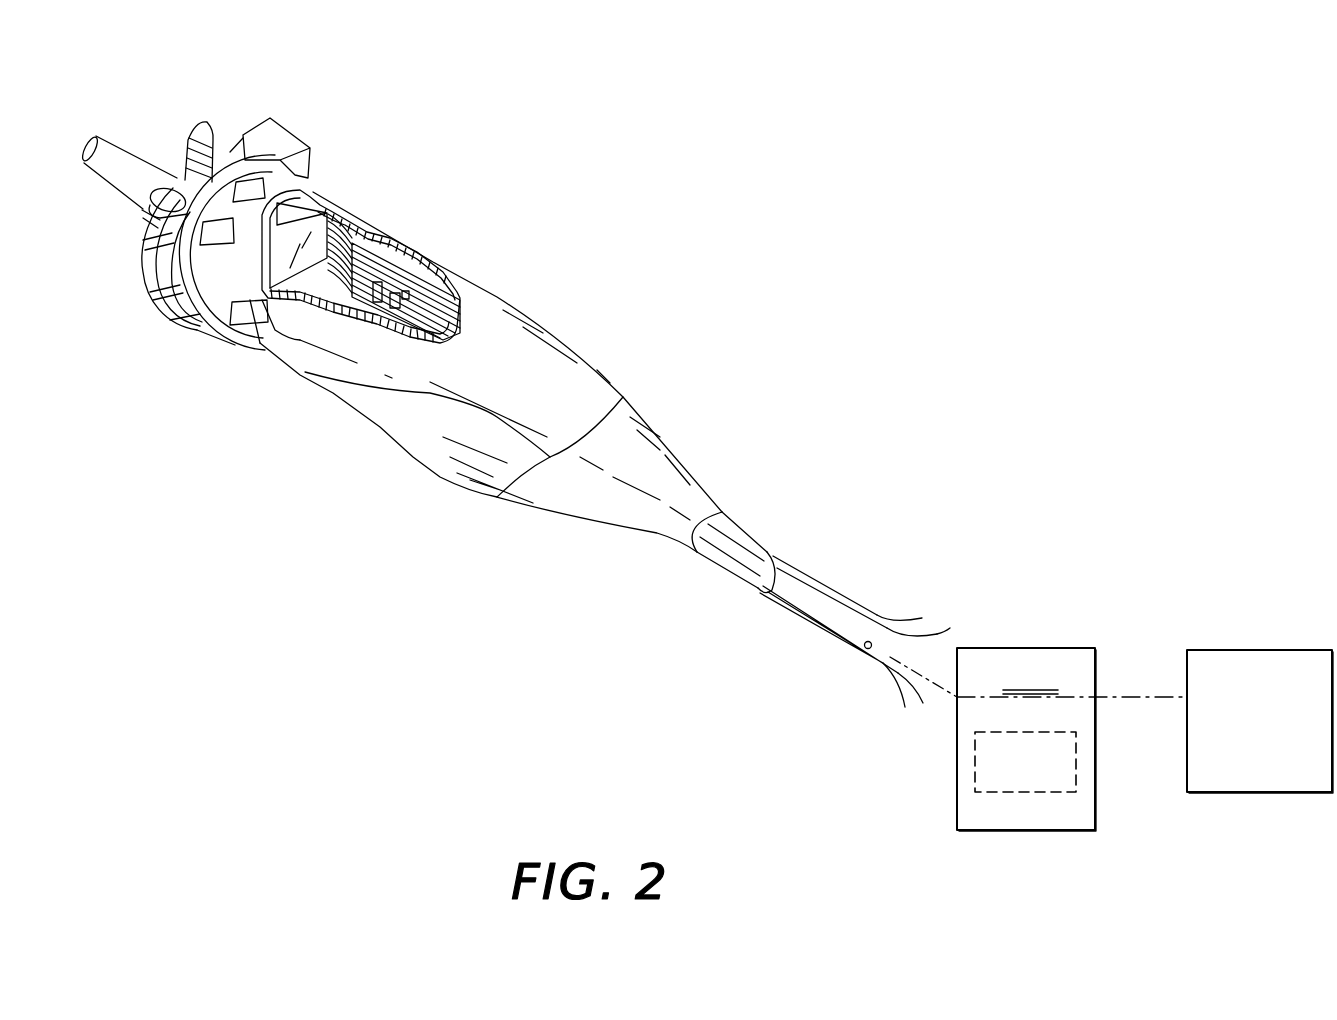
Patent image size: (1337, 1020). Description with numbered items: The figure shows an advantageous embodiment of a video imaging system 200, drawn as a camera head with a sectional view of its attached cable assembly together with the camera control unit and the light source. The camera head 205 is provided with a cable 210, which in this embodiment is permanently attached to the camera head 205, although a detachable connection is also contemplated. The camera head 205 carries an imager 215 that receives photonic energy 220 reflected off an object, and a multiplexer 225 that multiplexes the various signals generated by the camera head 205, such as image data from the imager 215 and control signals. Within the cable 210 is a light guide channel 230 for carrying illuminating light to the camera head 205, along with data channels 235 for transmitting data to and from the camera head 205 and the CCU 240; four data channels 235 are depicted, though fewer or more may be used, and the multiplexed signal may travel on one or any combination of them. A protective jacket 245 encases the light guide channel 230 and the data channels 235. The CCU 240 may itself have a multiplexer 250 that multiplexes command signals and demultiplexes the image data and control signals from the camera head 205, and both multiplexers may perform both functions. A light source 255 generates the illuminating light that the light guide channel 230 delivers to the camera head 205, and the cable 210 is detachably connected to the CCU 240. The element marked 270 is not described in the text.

The video imaging system 200 is at (642, 300).
The camera head 205 is at (323, 382).
The cable 210 is at (730, 574).
The imager 215 is at (333, 217).
The photonic energy 220 is at (79, 136).
The multiplexer 225 is at (410, 285).
The light guide channel 230 is at (922, 645).
The data channels 235 is at (880, 615).
The CCU 240 is at (1027, 832).
The protective jacket 245 is at (745, 543).
The multiplexer 250 is at (973, 758).
The light source 255 is at (1258, 794).
The communication link 270 is at (1118, 697).